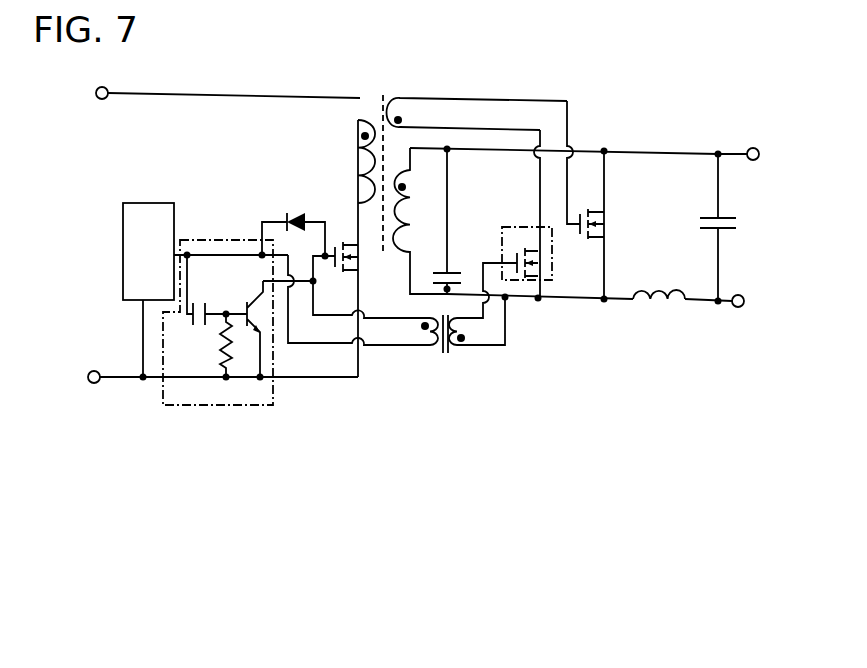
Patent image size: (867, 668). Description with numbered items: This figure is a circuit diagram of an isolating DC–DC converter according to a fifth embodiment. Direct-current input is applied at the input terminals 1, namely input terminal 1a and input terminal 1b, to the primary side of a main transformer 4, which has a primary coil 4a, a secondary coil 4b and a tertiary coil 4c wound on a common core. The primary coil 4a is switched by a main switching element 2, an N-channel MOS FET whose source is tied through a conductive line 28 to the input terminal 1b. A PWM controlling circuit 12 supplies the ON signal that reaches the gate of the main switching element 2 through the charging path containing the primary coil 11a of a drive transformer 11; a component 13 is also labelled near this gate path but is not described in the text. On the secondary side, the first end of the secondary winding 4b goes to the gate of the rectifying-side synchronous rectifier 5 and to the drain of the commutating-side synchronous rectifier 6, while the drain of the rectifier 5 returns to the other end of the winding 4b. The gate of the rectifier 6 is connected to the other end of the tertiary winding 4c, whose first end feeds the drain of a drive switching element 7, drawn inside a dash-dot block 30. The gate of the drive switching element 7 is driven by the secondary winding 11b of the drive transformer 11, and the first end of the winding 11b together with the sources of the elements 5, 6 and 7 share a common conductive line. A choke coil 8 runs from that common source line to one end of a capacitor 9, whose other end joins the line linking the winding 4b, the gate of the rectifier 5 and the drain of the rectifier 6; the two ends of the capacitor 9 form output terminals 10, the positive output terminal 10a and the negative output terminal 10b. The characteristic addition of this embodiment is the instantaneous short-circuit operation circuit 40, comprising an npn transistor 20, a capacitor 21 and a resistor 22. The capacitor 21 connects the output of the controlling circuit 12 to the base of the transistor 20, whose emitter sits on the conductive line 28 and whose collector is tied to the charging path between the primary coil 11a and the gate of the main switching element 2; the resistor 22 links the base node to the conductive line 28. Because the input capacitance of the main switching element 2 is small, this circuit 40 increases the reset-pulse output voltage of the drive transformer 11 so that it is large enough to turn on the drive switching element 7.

The input terminals 1 is at (215, 235).
The input terminal 1a is at (218, 106).
The input terminal 1b is at (214, 363).
The main switching element 2 is at (343, 261).
The main transformer 4 is at (384, 95).
The primary coil 4a is at (357, 161).
The secondary winding 4b is at (420, 221).
The tertiary winding 4c is at (477, 114).
The rectifying-side synchronous rectifier 5 is at (447, 221).
The commutating-side synchronous rectifier 6 is at (592, 202).
The drive switching element 7 is at (529, 216).
The choke coil 8 is at (659, 285).
The capacitor 9 is at (716, 228).
The output terminals 10 is at (757, 231).
The (+) side output terminal 10a is at (761, 143).
The (−) side output terminal 10b is at (753, 316).
The drive transformer 11 is at (450, 319).
The primary coil of drive transformer 11a is at (410, 332).
The secondary winding of drive transformer 11b is at (483, 304).
The PWM controlling circuit 12 is at (144, 203).
The diode 13 is at (295, 225).
The npn transistor 20 is at (245, 331).
The capacitor 21 is at (197, 296).
The resistor 22 is at (213, 346).
The conductive line 28 is at (300, 379).
The drive circuit 30 is at (548, 216).
The instantaneous short-circuit operation circuit 40 is at (203, 240).